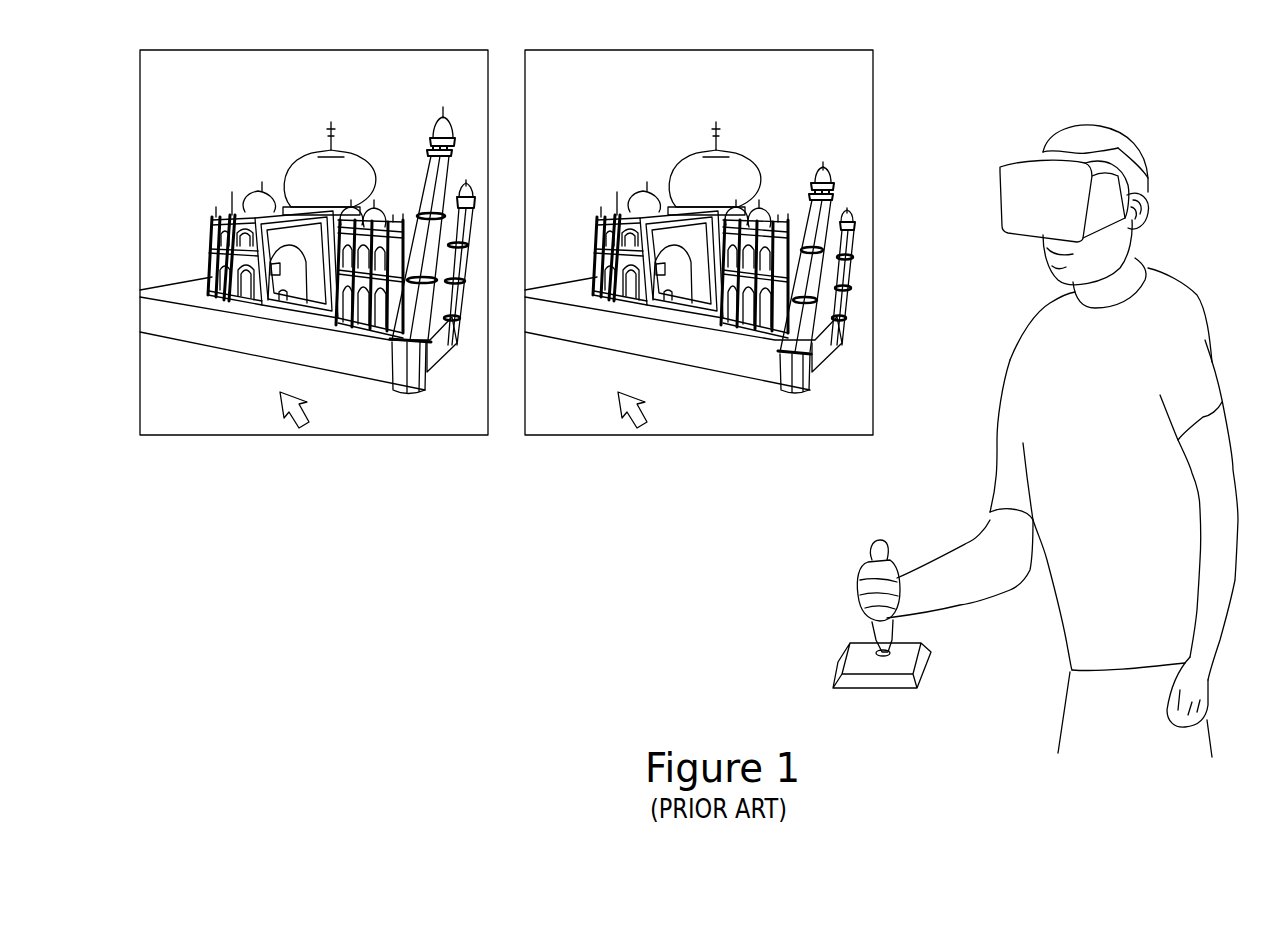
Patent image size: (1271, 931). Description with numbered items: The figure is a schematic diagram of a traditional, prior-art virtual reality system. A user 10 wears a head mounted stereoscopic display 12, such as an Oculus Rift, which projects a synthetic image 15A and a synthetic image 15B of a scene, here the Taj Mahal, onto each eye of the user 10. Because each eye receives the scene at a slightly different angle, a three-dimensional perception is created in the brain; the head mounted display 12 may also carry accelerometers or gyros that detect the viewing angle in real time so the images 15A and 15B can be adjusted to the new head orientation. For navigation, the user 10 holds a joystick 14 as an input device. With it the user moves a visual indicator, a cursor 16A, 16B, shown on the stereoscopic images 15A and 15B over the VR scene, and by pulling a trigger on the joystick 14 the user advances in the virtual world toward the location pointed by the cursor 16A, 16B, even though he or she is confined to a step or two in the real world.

The user 10 is at (1172, 160).
The head mounted stereoscopic display 12 is at (983, 192).
The joystick 14 is at (833, 597).
The synthetic image 15A is at (363, 468).
The synthetic image 15B is at (711, 468).
The cursor 16A is at (281, 410).
The cursor 16B is at (619, 410).